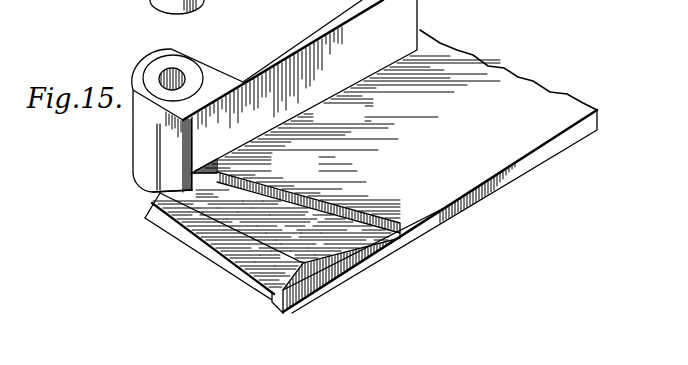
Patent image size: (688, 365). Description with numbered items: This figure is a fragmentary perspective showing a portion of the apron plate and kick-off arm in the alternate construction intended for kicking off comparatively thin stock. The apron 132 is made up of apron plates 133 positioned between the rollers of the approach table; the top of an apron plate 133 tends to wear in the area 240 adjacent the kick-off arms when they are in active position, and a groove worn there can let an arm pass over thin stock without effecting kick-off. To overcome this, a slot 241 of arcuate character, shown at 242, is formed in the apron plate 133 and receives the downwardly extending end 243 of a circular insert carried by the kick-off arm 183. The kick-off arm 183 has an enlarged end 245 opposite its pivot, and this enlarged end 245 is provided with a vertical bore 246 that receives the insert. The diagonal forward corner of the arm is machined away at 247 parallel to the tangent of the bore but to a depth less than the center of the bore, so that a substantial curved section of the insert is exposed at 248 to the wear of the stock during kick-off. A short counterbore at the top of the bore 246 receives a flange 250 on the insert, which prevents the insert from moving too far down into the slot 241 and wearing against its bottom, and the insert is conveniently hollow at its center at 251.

The apron 132 is at (531, 112).
The apron plate 133 is at (415, 86).
The kick-off arm 183 is at (318, 40).
The worn area 240 is at (321, 160).
The slot 241 is at (333, 237).
The arcuate character of slot 242 is at (283, 190).
The downwardly extending end of insert 243 is at (153, 198).
The enlarged end of kick-off arm 245 is at (205, 8).
The vertical bore 246 is at (153, 153).
The machined-away portion 247 is at (200, 150).
The exposed curved section of insert 248 is at (147, 220).
The flange 250 is at (193, 70).
The hollow center of insert 251 is at (205, 38).